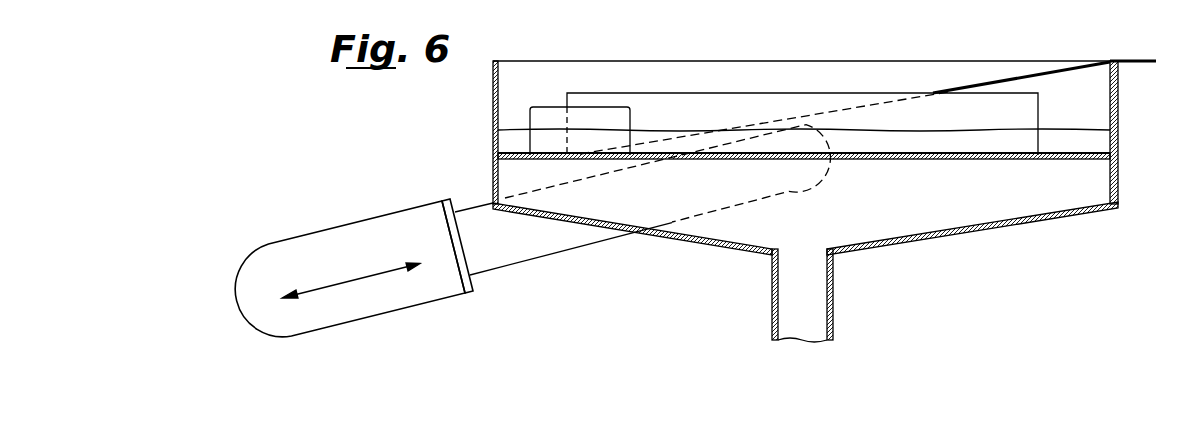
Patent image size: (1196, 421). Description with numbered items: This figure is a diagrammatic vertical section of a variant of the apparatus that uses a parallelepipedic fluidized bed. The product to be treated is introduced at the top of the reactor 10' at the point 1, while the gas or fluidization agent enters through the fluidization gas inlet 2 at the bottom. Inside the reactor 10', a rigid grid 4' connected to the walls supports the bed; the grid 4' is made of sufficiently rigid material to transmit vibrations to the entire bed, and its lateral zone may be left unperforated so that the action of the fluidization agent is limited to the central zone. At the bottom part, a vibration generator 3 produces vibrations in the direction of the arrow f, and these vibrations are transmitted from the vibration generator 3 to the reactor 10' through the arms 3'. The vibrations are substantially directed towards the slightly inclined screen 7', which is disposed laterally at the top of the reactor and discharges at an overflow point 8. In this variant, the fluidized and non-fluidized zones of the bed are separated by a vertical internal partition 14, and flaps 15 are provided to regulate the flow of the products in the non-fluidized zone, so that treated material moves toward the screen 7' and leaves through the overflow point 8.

The product introduction point 1 is at (998, 10).
The fluidization gas inlet 2 is at (834, 307).
The vibration generator 3 is at (354, 268).
The arms 3' is at (571, 265).
The grid 4' is at (804, 213).
The screen 7' is at (1021, 50).
The overflow point 8 is at (1149, 61).
The reactor 10' is at (466, 132).
The vertical internal partition 14 is at (612, 95).
The flaps 15 is at (548, 116).